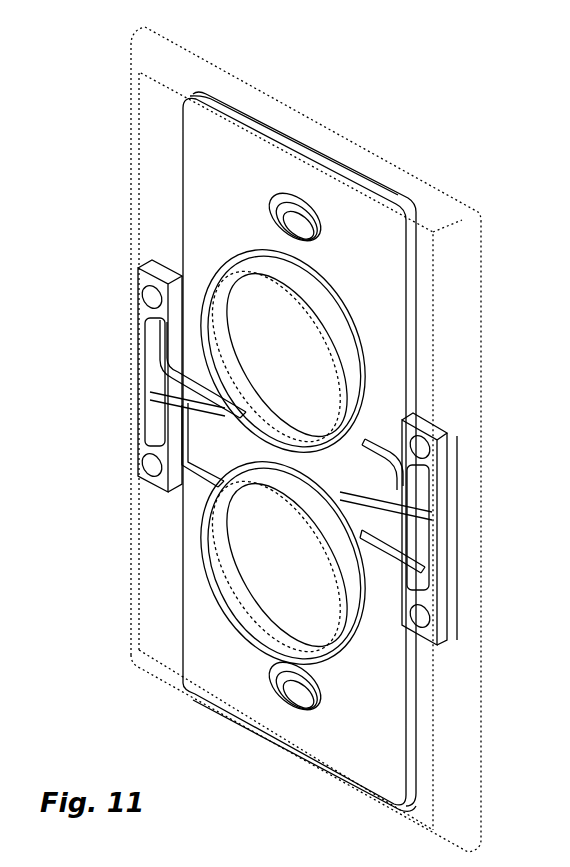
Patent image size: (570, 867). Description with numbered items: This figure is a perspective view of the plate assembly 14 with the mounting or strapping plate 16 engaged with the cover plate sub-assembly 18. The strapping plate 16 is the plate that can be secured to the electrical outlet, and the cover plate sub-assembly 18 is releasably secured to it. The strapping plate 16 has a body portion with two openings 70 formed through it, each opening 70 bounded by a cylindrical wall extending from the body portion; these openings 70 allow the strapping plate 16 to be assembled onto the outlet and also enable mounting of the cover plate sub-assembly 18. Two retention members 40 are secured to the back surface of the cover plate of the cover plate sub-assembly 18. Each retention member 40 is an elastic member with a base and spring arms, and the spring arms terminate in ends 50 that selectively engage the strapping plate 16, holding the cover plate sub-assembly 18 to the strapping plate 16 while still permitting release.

The plate assembly 14 is at (316, 84).
The strapping plate 16 is at (398, 198).
The cover plate sub-assembly 18 is at (128, 162).
The retention member 40 is at (146, 490).
The end 50 is at (363, 434).
The opening 70 is at (357, 350).